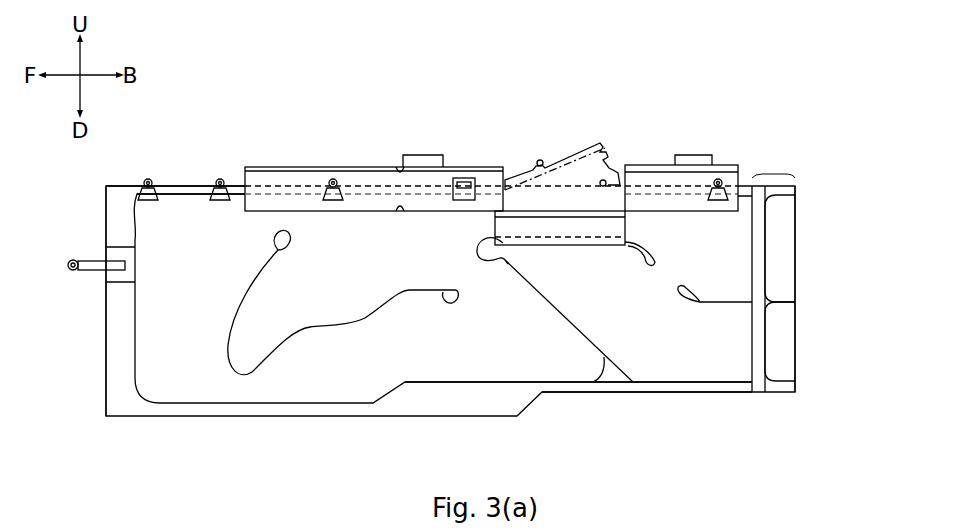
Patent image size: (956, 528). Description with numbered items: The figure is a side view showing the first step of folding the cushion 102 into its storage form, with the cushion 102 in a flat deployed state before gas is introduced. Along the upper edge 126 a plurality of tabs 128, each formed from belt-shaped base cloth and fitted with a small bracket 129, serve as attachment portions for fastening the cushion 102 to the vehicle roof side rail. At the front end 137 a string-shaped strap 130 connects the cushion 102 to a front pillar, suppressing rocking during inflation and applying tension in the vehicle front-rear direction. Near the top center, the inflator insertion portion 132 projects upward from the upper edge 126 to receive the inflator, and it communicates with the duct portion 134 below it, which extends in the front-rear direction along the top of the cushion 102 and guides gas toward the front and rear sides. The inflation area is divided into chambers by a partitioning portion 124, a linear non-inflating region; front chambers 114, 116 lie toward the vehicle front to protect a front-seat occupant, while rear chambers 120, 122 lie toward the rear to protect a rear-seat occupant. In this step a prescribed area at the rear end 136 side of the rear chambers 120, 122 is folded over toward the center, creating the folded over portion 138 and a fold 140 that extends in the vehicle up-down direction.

The cushion 102 is at (202, 157).
The front chamber 114 is at (183, 355).
The front chamber 116 is at (300, 307).
The rear chamber 120 is at (710, 359).
The rear chamber 122 is at (712, 283).
The partitioning portion 124 is at (460, 293).
The upper edge 126 is at (237, 186).
The tab 128 is at (700, 193).
The bracket 129 is at (728, 183).
The strap 130 is at (92, 262).
The inflator insertion portion 132 is at (565, 152).
The duct portion 134 is at (480, 228).
The rear end 136 is at (750, 351).
The front end 137 is at (105, 334).
The folded over portion 138 is at (773, 173).
The fold 140 is at (796, 252).